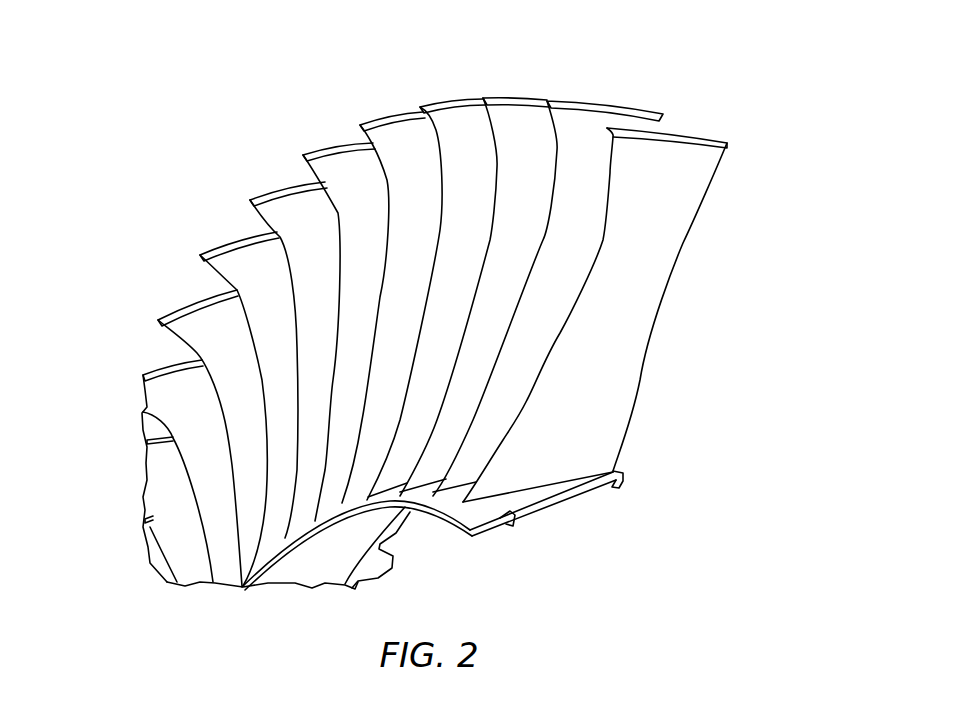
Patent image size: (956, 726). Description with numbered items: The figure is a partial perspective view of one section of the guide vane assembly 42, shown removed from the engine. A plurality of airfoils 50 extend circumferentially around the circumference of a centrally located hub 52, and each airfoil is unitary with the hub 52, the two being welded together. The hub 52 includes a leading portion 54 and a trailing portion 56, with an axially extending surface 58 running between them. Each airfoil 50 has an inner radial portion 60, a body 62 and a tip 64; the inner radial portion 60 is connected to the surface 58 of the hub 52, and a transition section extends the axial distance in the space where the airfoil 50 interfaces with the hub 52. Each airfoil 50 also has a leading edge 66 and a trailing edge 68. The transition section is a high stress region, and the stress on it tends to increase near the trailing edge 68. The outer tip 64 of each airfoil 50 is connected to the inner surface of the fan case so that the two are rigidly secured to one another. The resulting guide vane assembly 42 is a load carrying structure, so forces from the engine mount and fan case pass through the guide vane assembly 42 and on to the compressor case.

The guide vane assembly 42 is at (770, 92).
The airfoil 50 is at (223, 337).
The hub 52 is at (473, 528).
The leading portion 54 is at (456, 520).
The trailing portion 56 is at (627, 485).
The axially extending surface 58 is at (515, 500).
The inner radial portion 60 is at (585, 462).
The body 62 is at (630, 297).
The tip 64 is at (720, 160).
The leading edge 66 is at (600, 237).
The trailing edge 68 is at (683, 245).